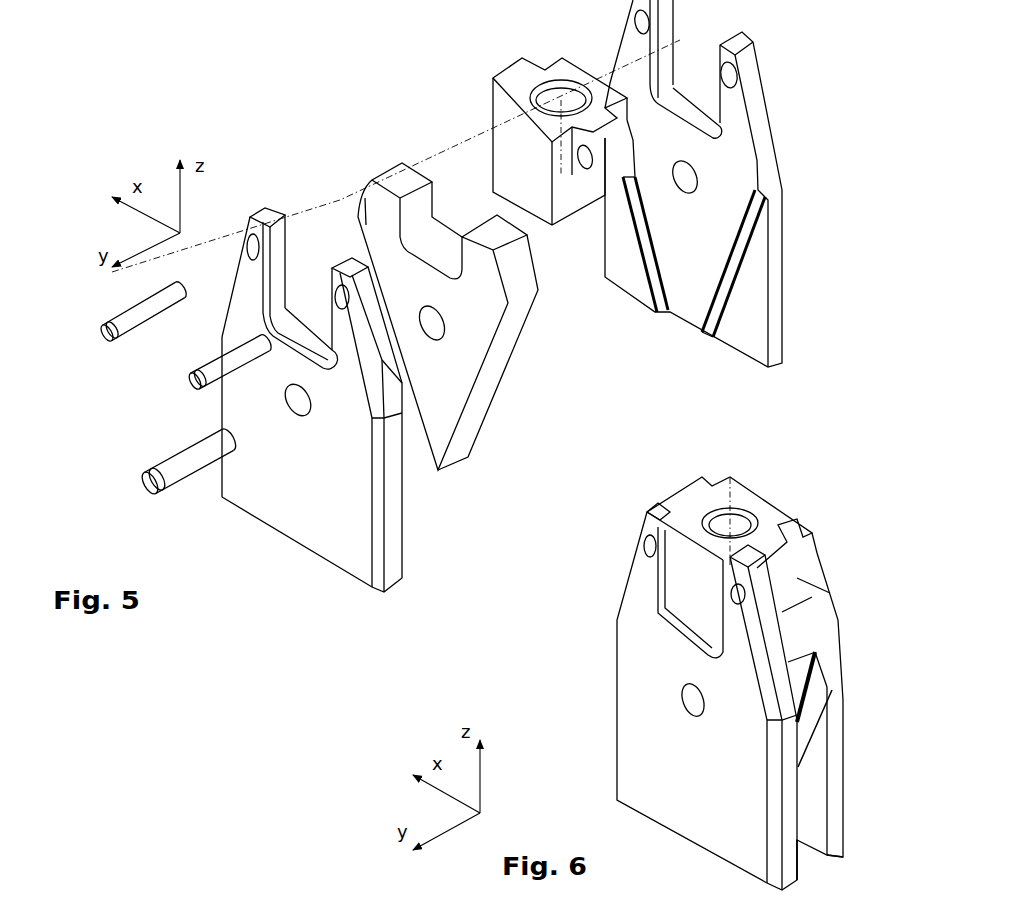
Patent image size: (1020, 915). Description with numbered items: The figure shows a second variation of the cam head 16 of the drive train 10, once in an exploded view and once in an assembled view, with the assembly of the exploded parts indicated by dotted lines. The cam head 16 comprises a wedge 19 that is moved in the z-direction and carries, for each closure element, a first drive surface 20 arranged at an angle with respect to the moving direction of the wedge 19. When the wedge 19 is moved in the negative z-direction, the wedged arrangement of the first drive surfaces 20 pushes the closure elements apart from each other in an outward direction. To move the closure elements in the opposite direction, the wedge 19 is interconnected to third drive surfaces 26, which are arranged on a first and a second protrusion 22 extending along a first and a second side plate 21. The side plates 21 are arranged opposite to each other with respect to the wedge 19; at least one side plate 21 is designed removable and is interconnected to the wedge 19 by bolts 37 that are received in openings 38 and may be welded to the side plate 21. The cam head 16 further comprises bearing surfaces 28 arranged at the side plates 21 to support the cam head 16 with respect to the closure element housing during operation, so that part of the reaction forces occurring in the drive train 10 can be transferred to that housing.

In FIG. 5, the drive train 10 is at (170, 125).
In FIG. 5, the cam head 16 is at (462, 141).
In FIG. 6, the cam head 16 is at (603, 630).
In FIG. 5, the wedge 19 is at (345, 203).
In FIG. 6, the wedge 19 is at (800, 637).
In FIG. 5, the first drive surface 20 is at (485, 400).
In FIG. 6, the first drive surface 20 is at (787, 670).
In FIG. 5, the side plate 21 is at (317, 503).
In FIG. 6, the side plate 21 is at (813, 585).
In FIG. 5, the protrusion 22 is at (640, 298).
In FIG. 6, the protrusion 22 is at (822, 737).
In FIG. 5, the third drive surface 26 is at (735, 262).
In FIG. 6, the third drive surface 26 is at (807, 700).
In FIG. 6, the bearing surface 28 is at (833, 793).
In FIG. 5, the bolt 37 is at (142, 312).
In FIG. 6, the bolt 37 is at (813, 533).
In FIG. 5, the opening 38 is at (488, 95).
In FIG. 6, the opening 38 is at (673, 710).